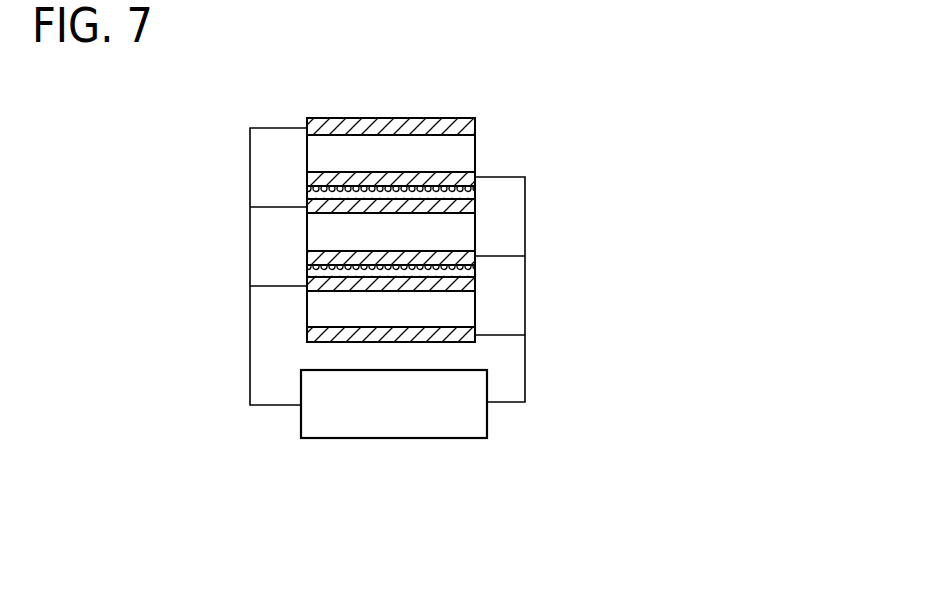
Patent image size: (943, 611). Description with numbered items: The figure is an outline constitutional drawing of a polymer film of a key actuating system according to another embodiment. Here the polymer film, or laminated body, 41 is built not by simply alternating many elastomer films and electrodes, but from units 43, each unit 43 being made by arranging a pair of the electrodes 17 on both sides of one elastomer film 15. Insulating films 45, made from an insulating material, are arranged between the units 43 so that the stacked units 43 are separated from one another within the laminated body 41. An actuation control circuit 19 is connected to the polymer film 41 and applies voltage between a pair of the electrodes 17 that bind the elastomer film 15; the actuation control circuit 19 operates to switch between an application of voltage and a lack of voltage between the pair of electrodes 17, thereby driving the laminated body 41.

The polymer film (laminated body) 41 is at (476, 118).
The unit 43 is at (306, 151).
The insulating film 45 is at (307, 196).
The electrode 17 is at (475, 199).
The elastomer film 15 is at (475, 229).
The actuation control circuit 19 is at (392, 438).